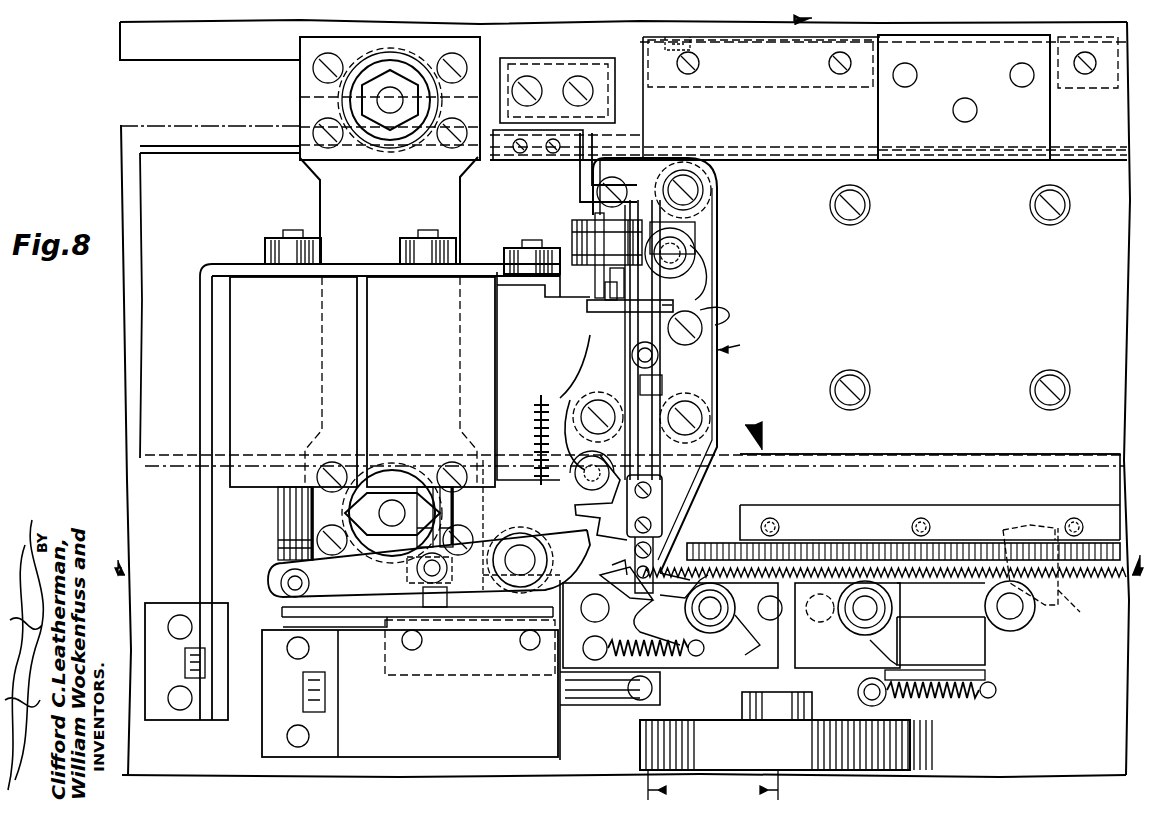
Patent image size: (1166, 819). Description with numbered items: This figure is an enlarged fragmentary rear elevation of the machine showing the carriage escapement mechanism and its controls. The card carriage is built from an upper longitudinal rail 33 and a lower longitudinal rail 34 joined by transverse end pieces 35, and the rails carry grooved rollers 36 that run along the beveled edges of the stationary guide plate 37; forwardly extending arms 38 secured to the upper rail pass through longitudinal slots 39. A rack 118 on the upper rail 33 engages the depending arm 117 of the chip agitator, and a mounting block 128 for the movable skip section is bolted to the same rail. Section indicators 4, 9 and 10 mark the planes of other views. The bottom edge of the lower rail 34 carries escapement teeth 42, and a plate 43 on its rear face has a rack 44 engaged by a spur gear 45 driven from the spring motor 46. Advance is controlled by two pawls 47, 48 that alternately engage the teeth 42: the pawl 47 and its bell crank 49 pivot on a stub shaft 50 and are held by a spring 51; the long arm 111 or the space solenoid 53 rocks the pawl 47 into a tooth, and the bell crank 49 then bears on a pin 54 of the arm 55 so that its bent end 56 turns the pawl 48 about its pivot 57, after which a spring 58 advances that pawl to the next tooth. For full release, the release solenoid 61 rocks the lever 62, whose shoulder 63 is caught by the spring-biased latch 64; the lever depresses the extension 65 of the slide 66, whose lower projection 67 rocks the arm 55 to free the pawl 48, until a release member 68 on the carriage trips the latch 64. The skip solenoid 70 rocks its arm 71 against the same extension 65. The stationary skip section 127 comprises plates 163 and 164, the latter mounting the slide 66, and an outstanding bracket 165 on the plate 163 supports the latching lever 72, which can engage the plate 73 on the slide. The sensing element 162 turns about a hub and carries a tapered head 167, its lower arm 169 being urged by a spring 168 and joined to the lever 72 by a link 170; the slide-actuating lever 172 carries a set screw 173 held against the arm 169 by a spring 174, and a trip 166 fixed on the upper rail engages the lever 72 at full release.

The longitudinal slots 39 is at (170, 60).
The stationary guide plate 37 is at (212, 160).
The grooved rollers 36 is at (330, 97).
The transverse end pieces 35 is at (345, 193).
The forwardly extending arms 38 is at (610, 118).
The depending arm 117 is at (672, 52).
The rack 118 is at (770, 88).
The upper longitudinal rail 33 is at (800, 140).
The mounting block 128 is at (955, 138).
The section line 4 is at (742, 409).
The section line 9 is at (617, 570).
The section line 10 is at (745, 601).
The release solenoid 61 is at (250, 372).
The lower longitudinal rail 34 is at (972, 468).
The plate 43 is at (1013, 512).
The rack 44 is at (1090, 540).
The spur gear 45 is at (790, 545).
The pawl 47 is at (775, 578).
The teeth 42 is at (1078, 582).
The long arm 111 is at (1086, 609).
The skip solenoid 70 is at (505, 313).
The plate 164 is at (722, 245).
The tapered head 167 is at (712, 195).
The trip 166 is at (640, 175).
The latching lever 72 is at (660, 195).
The sensing element 162 is at (700, 280).
The outstanding bracket 165 is at (572, 238).
The slide-actuating lever 172 is at (590, 280).
The spring 174 is at (587, 305).
The slide 66 is at (700, 305).
The plate 163 is at (735, 322).
The spring 168 is at (702, 331).
The stationary section 127 is at (740, 345).
The adjustable set screw 173 is at (660, 358).
The lower arm 169 is at (665, 385).
The link 170 is at (700, 392).
The spring-biased latch 64 is at (590, 403).
The release member 68 is at (580, 507).
The shoulder 63 is at (600, 520).
The plate 73 is at (662, 527).
The projection 67 is at (653, 573).
The extension 65 is at (612, 563).
The lever 62 is at (343, 572).
The arm 71 is at (488, 585).
The space solenoid 53 is at (565, 760).
The pawl 48 is at (605, 592).
The bent end 56 is at (632, 598).
The pivot 57 is at (715, 610).
The spring 58 is at (665, 655).
The pin 54 is at (770, 620).
The arm 55 is at (739, 638).
The bell crank 49 is at (875, 655).
The stub shaft 50 is at (880, 615).
The spring 51 is at (940, 700).
The spring motor 46 is at (880, 752).